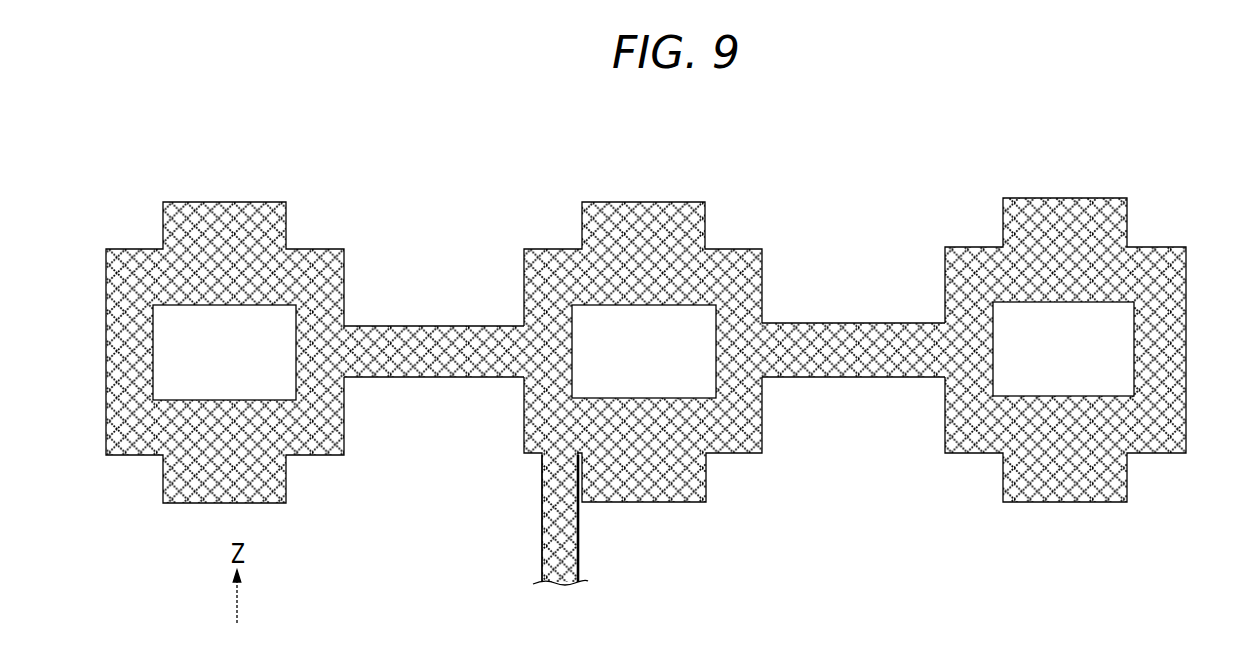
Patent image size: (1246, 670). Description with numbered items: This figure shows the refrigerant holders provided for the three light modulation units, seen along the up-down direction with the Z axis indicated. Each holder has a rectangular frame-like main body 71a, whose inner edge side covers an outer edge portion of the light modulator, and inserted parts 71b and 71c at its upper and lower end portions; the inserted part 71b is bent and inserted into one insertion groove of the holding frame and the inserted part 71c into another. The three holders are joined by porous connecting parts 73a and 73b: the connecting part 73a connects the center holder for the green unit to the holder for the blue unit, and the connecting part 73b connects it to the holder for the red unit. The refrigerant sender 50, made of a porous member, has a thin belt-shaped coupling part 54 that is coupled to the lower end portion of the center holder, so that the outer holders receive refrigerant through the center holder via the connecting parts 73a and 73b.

The main body 71a is at (720, 262).
The inserted part 71b is at (642, 215).
The inserted part 71c is at (675, 493).
The connecting part 73a is at (848, 360).
The connecting part 73b is at (430, 360).
The coupling part 54 is at (543, 562).
The refrigerant sender 50 is at (582, 561).